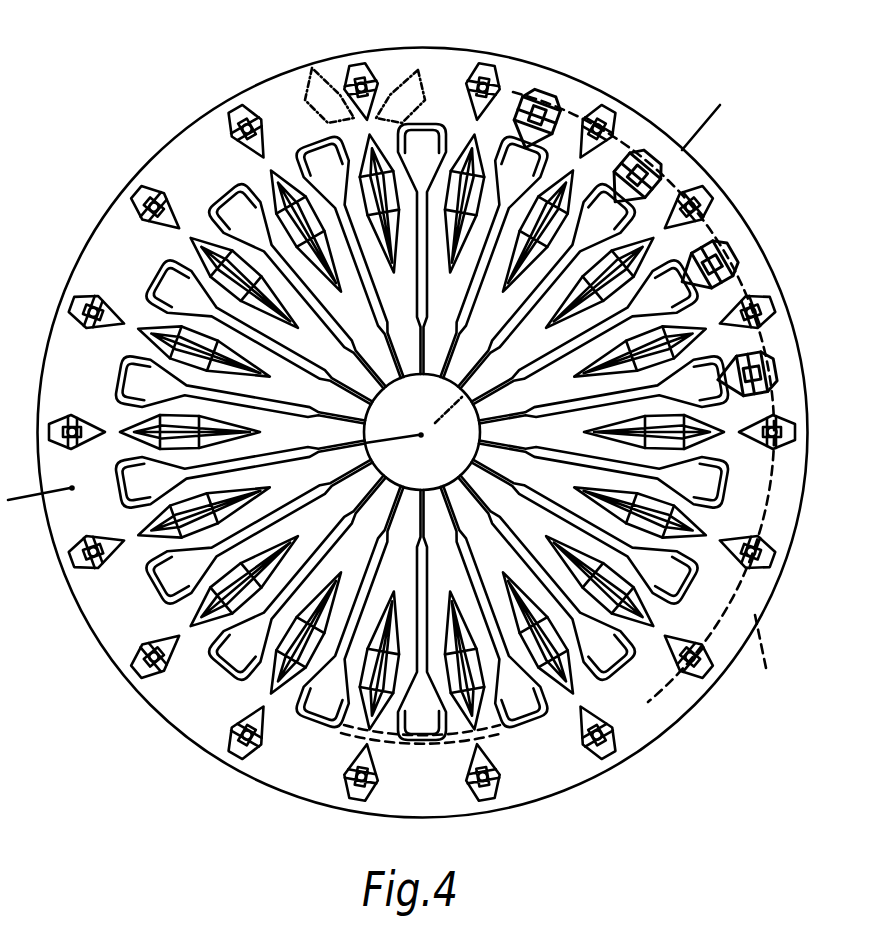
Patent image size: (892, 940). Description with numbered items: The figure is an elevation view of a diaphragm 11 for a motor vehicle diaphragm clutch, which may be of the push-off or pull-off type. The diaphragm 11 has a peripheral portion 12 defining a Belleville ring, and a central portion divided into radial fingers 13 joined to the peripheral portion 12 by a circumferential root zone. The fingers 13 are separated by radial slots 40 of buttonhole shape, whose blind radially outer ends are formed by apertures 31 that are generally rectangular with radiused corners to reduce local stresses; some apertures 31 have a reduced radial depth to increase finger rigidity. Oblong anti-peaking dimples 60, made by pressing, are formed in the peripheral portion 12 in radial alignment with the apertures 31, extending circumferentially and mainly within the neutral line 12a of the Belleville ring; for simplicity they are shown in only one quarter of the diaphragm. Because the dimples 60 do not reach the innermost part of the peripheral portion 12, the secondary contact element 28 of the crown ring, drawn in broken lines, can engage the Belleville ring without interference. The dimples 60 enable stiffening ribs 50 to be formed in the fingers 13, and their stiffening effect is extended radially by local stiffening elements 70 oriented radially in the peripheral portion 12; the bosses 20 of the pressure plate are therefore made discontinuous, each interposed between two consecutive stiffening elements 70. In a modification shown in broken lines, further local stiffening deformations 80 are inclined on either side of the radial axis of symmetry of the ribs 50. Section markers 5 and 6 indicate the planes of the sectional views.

The section line 5- 5 is at (22, 497).
The section line 6- 6 is at (717, 110).
The diaphragm 11 is at (262, 787).
The peripheral portion 12 is at (200, 708).
The neutral line 12a is at (768, 497).
The radial fingers 13 is at (422, 432).
The axial bosses 20 is at (762, 655).
The secondary contact element 28 is at (423, 752).
The apertures 31 is at (313, 717).
The radial slots 40 is at (158, 585).
The stiffening ribs 50 is at (460, 138).
The dimples 60 is at (664, 178).
The local stiffening elements 70 is at (600, 110).
The local stiffening deformations 80 is at (305, 65).